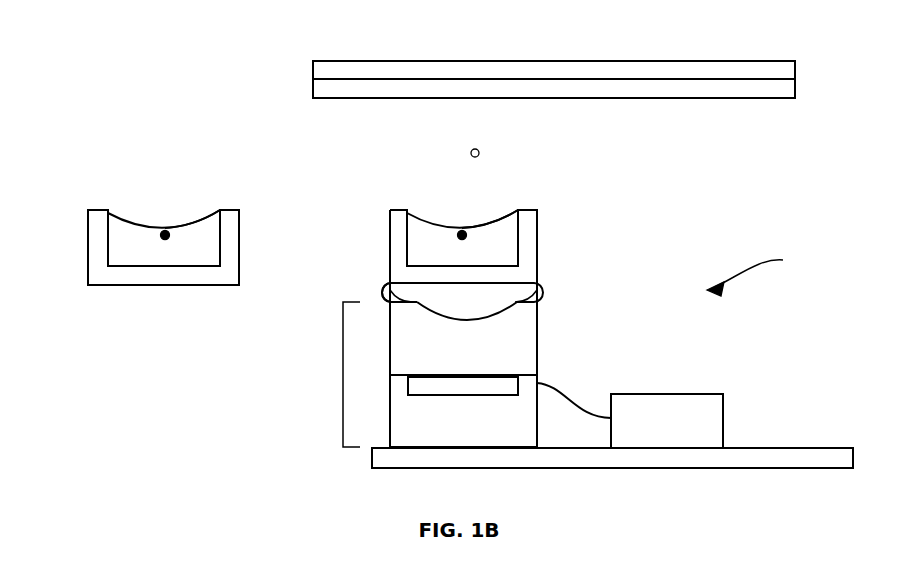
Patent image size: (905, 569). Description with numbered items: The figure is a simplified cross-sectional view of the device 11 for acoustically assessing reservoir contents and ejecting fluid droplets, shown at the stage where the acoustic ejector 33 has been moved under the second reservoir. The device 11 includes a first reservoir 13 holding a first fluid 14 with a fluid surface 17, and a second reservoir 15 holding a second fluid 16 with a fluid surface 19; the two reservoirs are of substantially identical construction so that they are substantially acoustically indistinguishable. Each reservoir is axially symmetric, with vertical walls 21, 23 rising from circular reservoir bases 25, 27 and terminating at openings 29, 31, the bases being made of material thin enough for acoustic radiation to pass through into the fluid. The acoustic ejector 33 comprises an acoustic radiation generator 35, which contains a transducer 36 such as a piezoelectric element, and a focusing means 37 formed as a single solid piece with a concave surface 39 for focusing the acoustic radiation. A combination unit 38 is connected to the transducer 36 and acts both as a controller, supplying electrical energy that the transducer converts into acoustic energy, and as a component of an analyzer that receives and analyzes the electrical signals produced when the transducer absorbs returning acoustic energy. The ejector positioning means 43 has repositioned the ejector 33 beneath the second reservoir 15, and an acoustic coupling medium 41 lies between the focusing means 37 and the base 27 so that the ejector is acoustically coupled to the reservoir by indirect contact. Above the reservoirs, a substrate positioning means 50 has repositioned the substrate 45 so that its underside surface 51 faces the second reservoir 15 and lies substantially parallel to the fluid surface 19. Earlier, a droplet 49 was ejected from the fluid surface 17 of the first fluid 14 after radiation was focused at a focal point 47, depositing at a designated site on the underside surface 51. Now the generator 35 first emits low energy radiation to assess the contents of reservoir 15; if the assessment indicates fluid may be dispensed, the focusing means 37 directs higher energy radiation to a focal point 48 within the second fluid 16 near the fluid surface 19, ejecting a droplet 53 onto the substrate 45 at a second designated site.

The device 11 is at (760, 271).
The first reservoir 13 is at (96, 243).
The first fluid 14 is at (208, 247).
The second reservoir 15 is at (530, 258).
The second fluid 16 is at (415, 252).
The fluid surface of first fluid 17 is at (204, 210).
The fluid surface of second fluid 19 is at (500, 210).
The vertical wall of first reservoir 21 is at (122, 226).
The vertical wall of second reservoir 23 is at (418, 232).
The reservoir base of first reservoir 25 is at (163, 285).
The reservoir base of second reservoir 27 is at (543, 293).
The opening of first reservoir 29 is at (118, 209).
The opening of second reservoir 31 is at (417, 207).
The acoustic ejector 33 is at (343, 377).
The acoustic radiation generator 35 is at (463, 428).
The transducer 36 is at (497, 380).
The focusing means 37 is at (463, 356).
The combination unit 38 is at (630, 415).
The concave surface 39 is at (382, 292).
The acoustic coupling medium 41 is at (467, 305).
The ejector positioning means 43 is at (380, 458).
The substrate 45 is at (322, 88).
The focal point 47 is at (165, 233).
The focal point 48 is at (462, 233).
The droplet 49 is at (410, 98).
The substrate positioning means 50 is at (787, 70).
The underside surface 51 is at (593, 98).
The droplet 53 is at (480, 152).